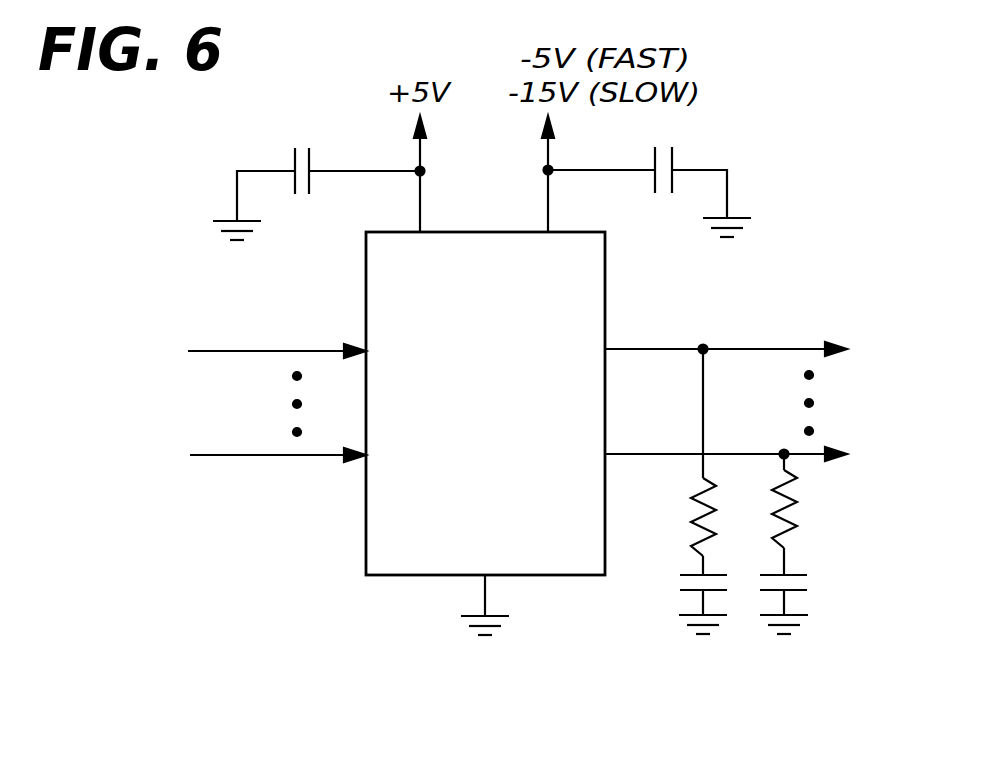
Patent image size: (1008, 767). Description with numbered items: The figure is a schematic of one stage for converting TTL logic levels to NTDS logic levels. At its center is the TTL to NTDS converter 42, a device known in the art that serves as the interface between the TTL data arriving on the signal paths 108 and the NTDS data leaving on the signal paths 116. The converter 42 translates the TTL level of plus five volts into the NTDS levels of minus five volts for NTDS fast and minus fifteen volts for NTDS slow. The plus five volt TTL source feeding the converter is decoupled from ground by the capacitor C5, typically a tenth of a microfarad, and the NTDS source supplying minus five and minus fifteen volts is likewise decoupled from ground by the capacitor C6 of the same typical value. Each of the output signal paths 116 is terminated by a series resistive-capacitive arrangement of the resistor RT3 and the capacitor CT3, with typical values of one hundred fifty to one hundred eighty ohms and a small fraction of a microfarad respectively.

The TTL to NTDS converter 42 is at (606, 285).
The signal paths 108 is at (298, 476).
The signal paths 116 is at (803, 348).
The capacitor C5 is at (328, 150).
The capacitor C6 is at (692, 155).
The termination resistor RT3 is at (803, 541).
The termination capacitor CT3 is at (816, 596).